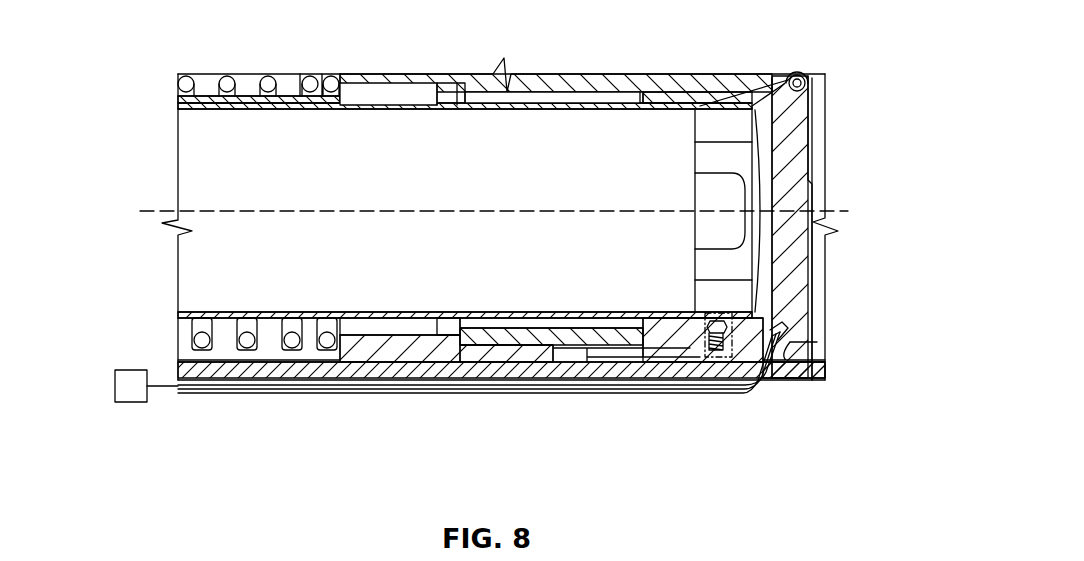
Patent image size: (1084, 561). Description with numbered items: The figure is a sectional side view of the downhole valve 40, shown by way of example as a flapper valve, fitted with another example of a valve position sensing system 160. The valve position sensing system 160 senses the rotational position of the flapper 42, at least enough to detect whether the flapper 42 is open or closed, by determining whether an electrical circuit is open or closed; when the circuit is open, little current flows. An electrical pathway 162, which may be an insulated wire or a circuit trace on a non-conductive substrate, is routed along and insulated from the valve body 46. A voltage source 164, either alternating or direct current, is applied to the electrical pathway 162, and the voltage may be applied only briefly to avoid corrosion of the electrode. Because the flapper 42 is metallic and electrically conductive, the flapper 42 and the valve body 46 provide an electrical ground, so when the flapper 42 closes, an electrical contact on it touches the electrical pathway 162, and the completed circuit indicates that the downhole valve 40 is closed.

The downhole valve 40 is at (494, 219).
The flapper 42 is at (808, 205).
The valve body 46 is at (606, 93).
The valve position sensing system 160 is at (815, 351).
The electrical pathway 162 is at (303, 395).
The voltage source 164 is at (128, 370).